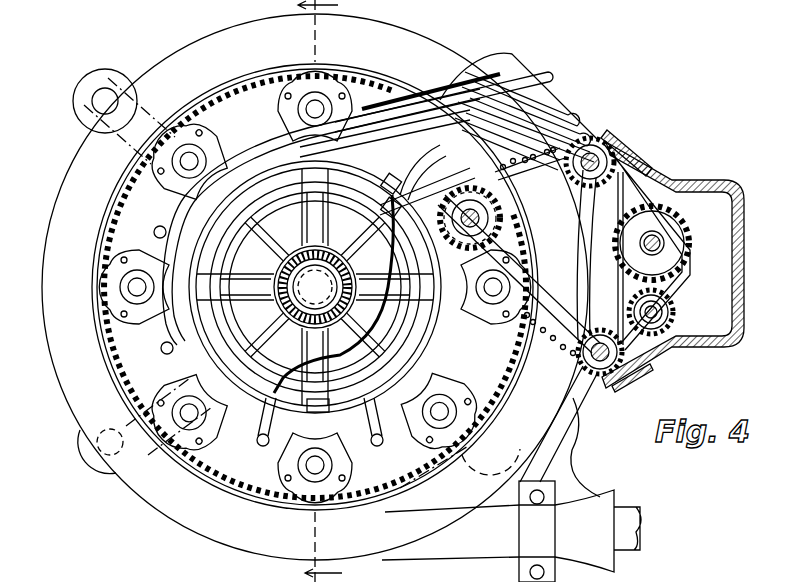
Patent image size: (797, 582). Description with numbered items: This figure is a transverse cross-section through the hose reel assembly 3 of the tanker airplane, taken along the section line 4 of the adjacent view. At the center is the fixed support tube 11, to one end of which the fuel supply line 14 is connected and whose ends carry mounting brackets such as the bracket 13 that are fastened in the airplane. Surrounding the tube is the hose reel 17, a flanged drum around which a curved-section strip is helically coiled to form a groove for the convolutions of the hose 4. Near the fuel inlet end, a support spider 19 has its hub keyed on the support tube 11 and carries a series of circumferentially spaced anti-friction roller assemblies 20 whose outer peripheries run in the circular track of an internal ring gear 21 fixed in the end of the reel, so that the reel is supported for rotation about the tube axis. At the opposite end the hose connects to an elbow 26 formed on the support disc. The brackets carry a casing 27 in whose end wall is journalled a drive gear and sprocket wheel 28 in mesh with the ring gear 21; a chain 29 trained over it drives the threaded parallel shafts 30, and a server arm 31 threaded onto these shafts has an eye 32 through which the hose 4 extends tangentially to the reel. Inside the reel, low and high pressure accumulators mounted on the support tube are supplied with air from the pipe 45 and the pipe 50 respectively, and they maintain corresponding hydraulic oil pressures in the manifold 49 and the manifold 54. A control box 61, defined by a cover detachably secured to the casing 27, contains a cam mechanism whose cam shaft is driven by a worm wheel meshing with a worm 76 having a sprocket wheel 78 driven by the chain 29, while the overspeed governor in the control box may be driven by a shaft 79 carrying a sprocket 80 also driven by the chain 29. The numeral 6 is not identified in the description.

The hose reel assembly 3 is at (327, 291).
The hose 4 is at (632, 508).
The rod 6 is at (608, 201).
The fixed support tube 11 is at (283, 352).
The mounting bracket 13 is at (160, 98).
The fuel supply line 14 is at (326, 236).
The hose reel 17 is at (426, 44).
The support spider 19 is at (232, 276).
The anti-friction roller assemblies 20 is at (282, 108).
The internal ring gear 21 is at (256, 80).
The elbow 26 is at (672, 581).
The casing 27 is at (576, 135).
The drive gear and sprocket wheel 28 is at (490, 222).
The chain 29 is at (555, 332).
The threaded parallel shafts 30 is at (600, 150).
The server arm 31 is at (575, 423).
The eye 32 is at (594, 500).
The pipe 45 is at (430, 108).
The manifold 49 is at (582, 155).
The pipe 50 is at (450, 104).
The manifold 54 is at (566, 120).
The control box 61 is at (700, 190).
The worm 76 is at (660, 240).
The sprocket wheel 78 is at (672, 256).
The shaft 79 is at (666, 312).
The sprocket 80 is at (668, 294).